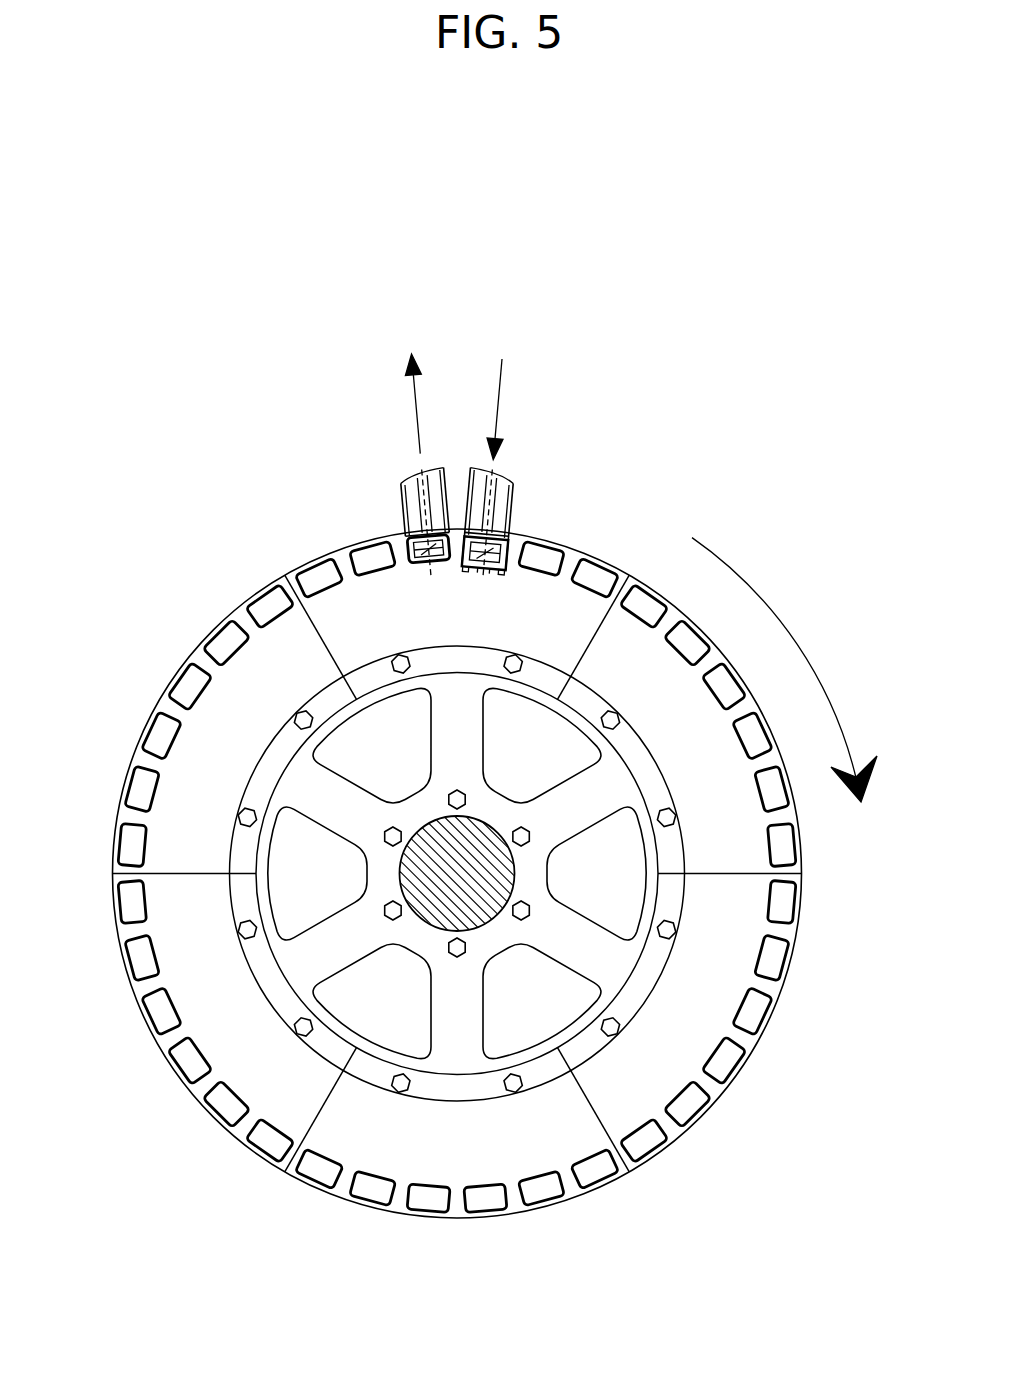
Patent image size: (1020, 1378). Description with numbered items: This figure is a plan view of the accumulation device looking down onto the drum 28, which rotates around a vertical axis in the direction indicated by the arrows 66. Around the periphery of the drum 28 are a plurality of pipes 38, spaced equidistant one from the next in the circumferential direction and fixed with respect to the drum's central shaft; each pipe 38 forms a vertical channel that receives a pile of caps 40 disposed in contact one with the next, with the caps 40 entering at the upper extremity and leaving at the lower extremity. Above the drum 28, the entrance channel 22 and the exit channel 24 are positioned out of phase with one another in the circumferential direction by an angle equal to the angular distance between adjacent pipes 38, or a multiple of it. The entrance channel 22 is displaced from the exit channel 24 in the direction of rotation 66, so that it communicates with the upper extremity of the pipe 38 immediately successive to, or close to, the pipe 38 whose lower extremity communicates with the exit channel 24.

The drum 28 is at (712, 393).
The entrance channel 22 is at (520, 485).
The exit channel 24 is at (408, 500).
The peripheral pipes 38 is at (133, 842).
The caps 40 is at (412, 550).
The arrows indicating direction of rotation 66 is at (798, 642).